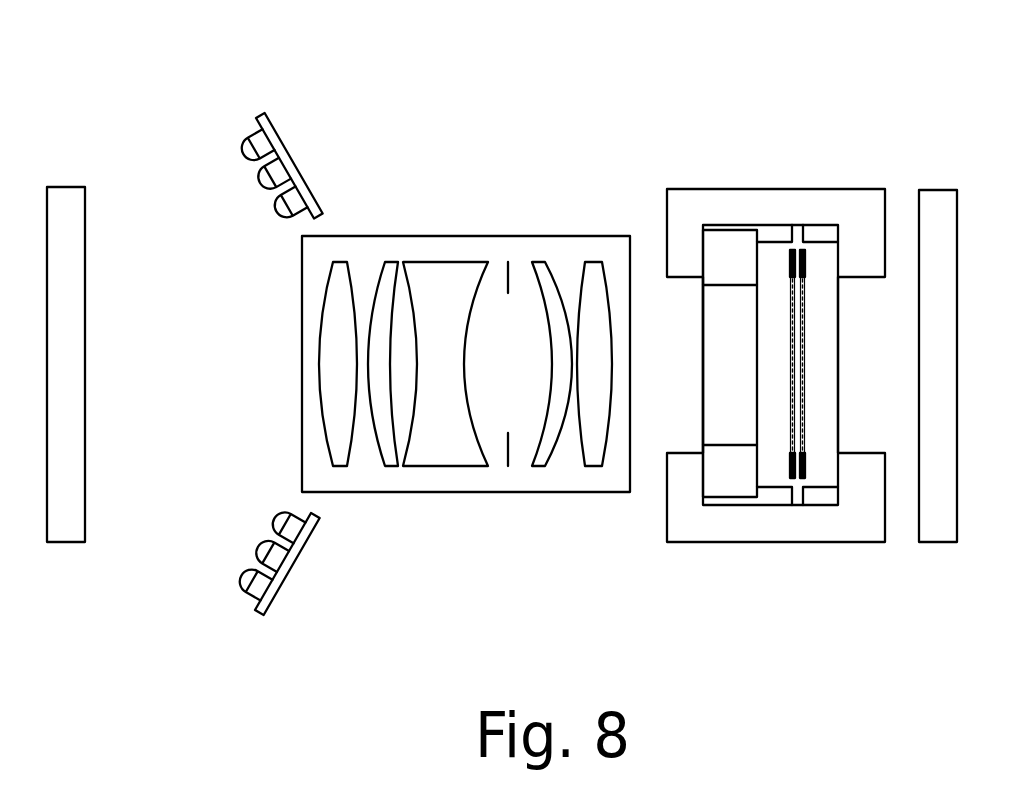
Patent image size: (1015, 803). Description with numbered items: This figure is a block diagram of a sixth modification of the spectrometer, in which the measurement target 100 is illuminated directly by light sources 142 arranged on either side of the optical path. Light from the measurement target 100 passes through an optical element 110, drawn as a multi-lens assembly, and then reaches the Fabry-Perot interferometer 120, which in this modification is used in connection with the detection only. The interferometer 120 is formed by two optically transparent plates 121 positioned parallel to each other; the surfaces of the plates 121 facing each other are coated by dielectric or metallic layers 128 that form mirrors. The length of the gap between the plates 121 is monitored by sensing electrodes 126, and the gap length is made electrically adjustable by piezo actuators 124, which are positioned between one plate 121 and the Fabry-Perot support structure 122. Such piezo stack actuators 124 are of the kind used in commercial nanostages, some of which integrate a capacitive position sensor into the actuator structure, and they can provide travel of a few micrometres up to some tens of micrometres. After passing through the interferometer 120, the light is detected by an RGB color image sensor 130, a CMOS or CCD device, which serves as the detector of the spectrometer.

The measurement target 100 is at (66, 193).
The optical element 110 is at (503, 205).
The Fabry-Perot interferometer 120 is at (756, 319).
The optically transparent plates 121 is at (823, 262).
The Fabry-Perot support structure 122 is at (707, 512).
The piezo actuators 124 is at (730, 458).
The sensing electrodes 126 is at (805, 468).
The dielectric or metallic layers 128 is at (792, 380).
The RGB color image sensor 130 is at (940, 205).
The light sources 142 is at (262, 117).